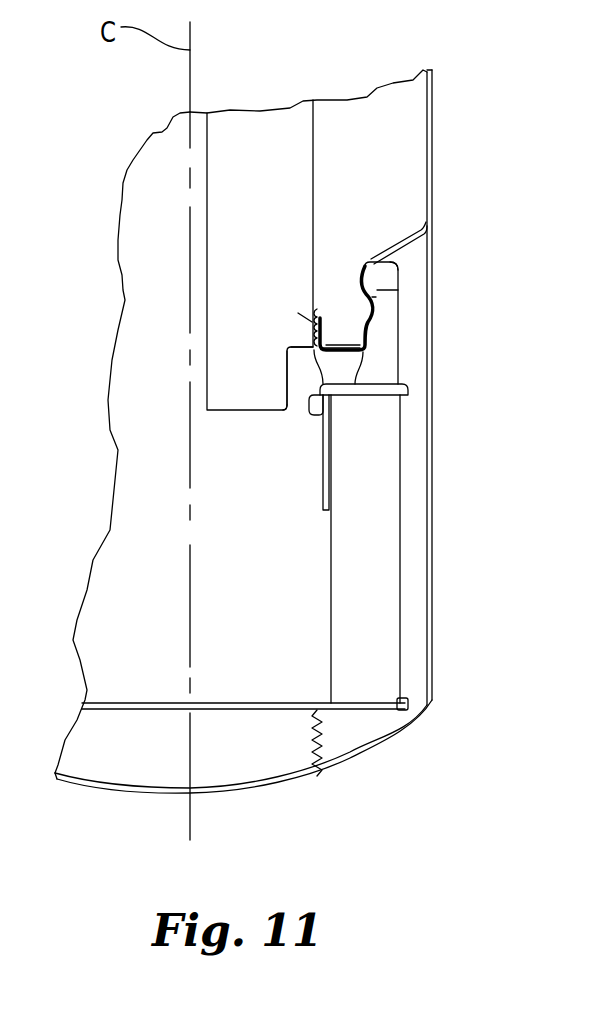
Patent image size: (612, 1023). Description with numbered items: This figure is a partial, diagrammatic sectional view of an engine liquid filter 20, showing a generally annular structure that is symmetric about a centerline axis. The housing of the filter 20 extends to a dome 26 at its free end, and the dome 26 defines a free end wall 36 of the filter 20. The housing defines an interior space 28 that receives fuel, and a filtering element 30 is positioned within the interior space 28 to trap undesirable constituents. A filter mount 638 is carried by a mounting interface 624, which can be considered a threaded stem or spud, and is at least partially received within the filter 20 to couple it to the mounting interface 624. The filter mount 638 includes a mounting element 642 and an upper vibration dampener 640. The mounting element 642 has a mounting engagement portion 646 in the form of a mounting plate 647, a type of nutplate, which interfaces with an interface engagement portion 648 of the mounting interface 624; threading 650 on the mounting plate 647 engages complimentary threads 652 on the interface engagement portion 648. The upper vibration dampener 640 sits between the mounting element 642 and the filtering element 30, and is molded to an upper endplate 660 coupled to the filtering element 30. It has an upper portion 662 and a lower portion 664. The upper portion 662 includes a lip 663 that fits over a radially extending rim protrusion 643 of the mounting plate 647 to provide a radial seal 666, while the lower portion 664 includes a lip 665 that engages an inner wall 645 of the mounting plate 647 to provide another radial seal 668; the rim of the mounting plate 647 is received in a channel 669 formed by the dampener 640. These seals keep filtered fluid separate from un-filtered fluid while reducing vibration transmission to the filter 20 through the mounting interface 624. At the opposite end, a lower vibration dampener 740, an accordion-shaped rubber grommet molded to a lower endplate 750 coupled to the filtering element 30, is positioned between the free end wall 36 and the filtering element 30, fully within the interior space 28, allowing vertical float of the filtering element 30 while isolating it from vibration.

The engine liquid filter 20 is at (458, 480).
The dome 26 is at (222, 797).
The interior space 28 is at (413, 596).
The filtering element 30 is at (370, 637).
The free end wall 36 is at (105, 790).
The mounting interface 624 is at (256, 148).
The filter mount 638 is at (420, 318).
The upper vibration dampener 640 is at (381, 347).
The mounting element 642 is at (426, 236).
The radially extending rim protrusion 643 is at (376, 297).
The inner wall 645 is at (292, 344).
The mounting engagement portion 646 is at (337, 311).
The mounting plate 647 is at (400, 375).
The interface engagement portion 648 is at (298, 313).
The threading 650 is at (335, 311).
The complimentary threads 652 is at (311, 324).
The upper endplate 660 is at (323, 470).
The upper portion 662 is at (402, 245).
The lip 663 is at (392, 268).
The lower portion 664 is at (298, 406).
The lip 665 is at (287, 376).
The radial seal 666 is at (371, 260).
The radial seal 668 is at (287, 358).
The channel 669 is at (349, 362).
The lower vibration dampener 740 is at (283, 763).
The lower endplate 750 is at (398, 709).